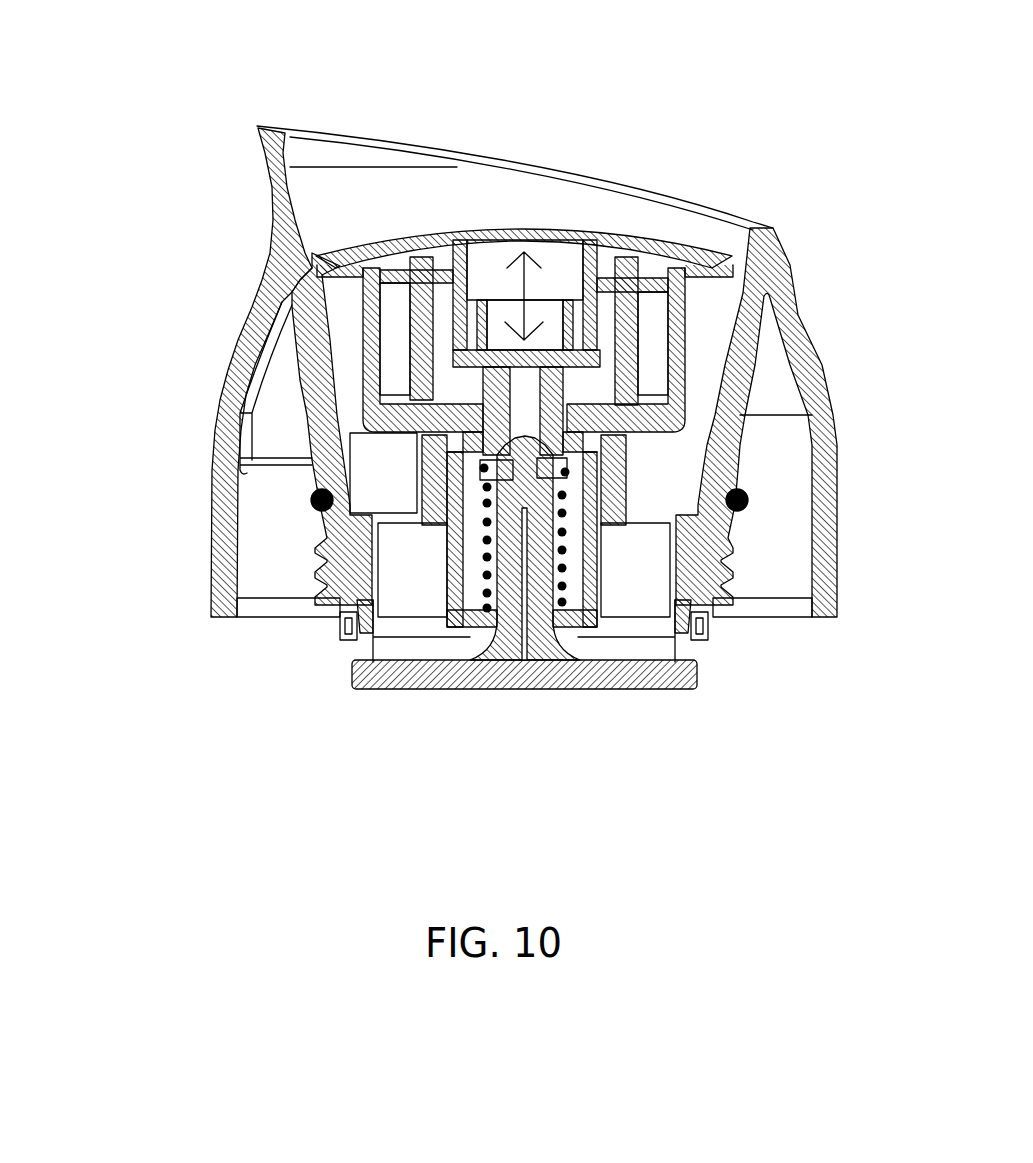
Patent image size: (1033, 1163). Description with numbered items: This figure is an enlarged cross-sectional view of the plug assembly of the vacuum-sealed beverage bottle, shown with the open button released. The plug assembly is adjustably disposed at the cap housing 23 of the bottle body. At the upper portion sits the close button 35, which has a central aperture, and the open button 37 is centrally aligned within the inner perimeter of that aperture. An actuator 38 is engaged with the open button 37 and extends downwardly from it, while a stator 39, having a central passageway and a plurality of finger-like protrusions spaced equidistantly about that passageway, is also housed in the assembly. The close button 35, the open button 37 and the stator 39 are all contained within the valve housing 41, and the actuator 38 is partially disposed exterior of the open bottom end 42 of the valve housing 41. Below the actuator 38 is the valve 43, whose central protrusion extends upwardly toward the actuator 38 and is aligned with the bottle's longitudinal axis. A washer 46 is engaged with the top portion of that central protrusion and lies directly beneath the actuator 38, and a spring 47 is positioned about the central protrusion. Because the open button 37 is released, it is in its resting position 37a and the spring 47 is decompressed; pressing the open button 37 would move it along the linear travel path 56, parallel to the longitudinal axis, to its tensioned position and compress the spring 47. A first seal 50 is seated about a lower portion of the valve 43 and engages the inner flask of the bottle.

The cap housing 23 is at (230, 347).
The close button 35 is at (607, 237).
The open button 37 is at (613, 240).
The resting position 37a is at (497, 190).
The actuator 38 is at (500, 320).
The stator 39 is at (392, 246).
The valve housing 41 is at (270, 292).
The open bottom end 42 is at (580, 417).
The valve 43 is at (453, 690).
The washer 46 is at (460, 468).
The spring 47 is at (487, 560).
The first seal 50 is at (370, 637).
The linear travel path 56 is at (527, 283).